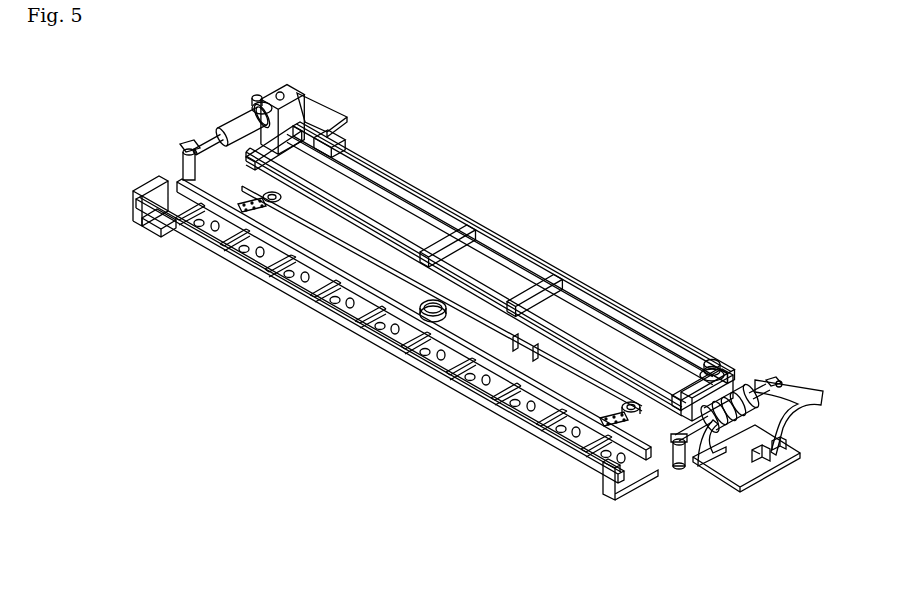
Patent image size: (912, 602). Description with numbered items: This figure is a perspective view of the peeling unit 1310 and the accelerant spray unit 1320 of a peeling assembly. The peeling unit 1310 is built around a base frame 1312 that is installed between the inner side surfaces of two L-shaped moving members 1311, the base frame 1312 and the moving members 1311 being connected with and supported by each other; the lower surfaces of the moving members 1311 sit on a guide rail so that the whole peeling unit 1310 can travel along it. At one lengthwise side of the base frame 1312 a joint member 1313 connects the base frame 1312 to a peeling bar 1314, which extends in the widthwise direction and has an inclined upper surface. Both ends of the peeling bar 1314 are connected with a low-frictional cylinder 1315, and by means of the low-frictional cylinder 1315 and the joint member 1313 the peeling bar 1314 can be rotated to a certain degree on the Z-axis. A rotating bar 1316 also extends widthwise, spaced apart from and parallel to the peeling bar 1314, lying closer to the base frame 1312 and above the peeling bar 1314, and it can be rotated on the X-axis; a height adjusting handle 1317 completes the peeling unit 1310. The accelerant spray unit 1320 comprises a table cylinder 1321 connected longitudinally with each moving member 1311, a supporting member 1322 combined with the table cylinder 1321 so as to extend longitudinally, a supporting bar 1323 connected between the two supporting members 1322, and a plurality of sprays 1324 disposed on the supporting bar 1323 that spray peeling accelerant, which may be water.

The peeling unit 1310 is at (190, 128).
The moving member 1311 is at (758, 476).
The base frame 1312 is at (400, 183).
The joint member 1313 is at (337, 140).
The peeling bar 1314 is at (315, 278).
The low-frictional cylinder 1315 is at (749, 380).
The rotating bar 1316 is at (500, 318).
The height adjusting handle 1317 is at (718, 362).
The accelerant spray unit 1320 is at (120, 194).
The table cylinder 1321 is at (679, 468).
The supporting member 1322 is at (627, 488).
The supporting bar 1323 is at (507, 417).
The spray 1324 is at (393, 347).